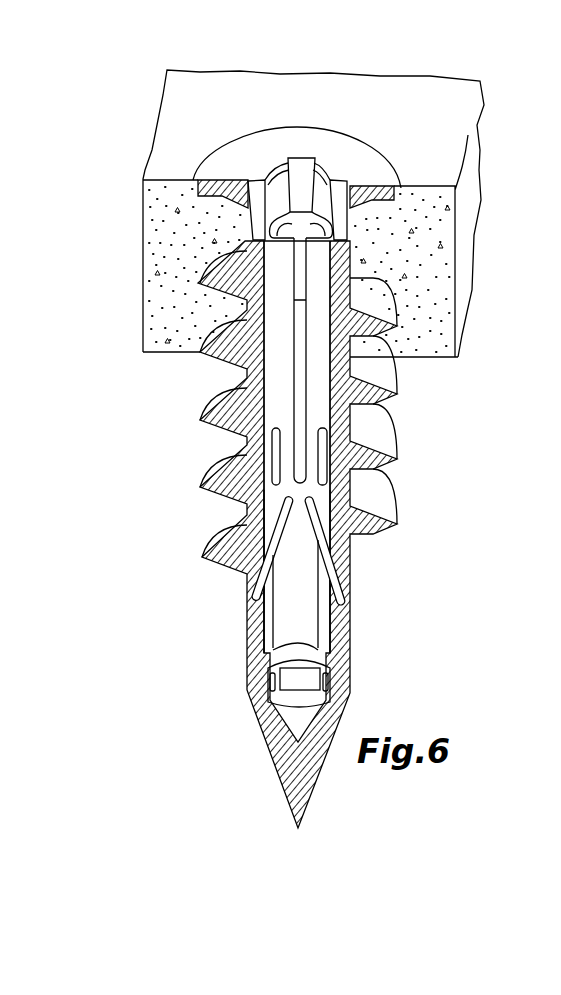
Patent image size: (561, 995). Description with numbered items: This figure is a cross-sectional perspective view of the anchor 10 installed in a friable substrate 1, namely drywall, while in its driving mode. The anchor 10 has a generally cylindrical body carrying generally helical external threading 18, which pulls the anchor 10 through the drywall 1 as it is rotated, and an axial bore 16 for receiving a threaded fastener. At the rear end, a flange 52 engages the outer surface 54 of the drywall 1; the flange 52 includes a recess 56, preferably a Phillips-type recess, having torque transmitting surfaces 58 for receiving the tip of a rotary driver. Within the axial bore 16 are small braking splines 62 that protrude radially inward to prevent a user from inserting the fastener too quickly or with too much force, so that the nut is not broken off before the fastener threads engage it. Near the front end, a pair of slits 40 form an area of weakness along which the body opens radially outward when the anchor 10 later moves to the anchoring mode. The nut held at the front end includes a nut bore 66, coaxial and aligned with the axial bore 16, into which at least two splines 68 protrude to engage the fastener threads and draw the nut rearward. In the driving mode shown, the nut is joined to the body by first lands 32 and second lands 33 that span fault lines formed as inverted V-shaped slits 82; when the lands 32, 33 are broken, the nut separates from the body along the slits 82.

The friable substrate 1 is at (560, 236).
The anchor 10 is at (485, 489).
The axial bore 16 is at (317, 293).
The external threading 18 is at (368, 328).
The first lands 32 is at (297, 492).
The second lands 33 is at (275, 595).
The slits 40 is at (303, 368).
The flange 52 is at (382, 187).
The outer surface 54 is at (252, 103).
The recess 56 is at (300, 183).
The torque transmitting surfaces 58 is at (230, 187).
The braking splines 62 is at (275, 455).
The nut bore 66 is at (300, 585).
The splines 68 is at (273, 648).
The inverted V-shaped slits 82 is at (272, 552).